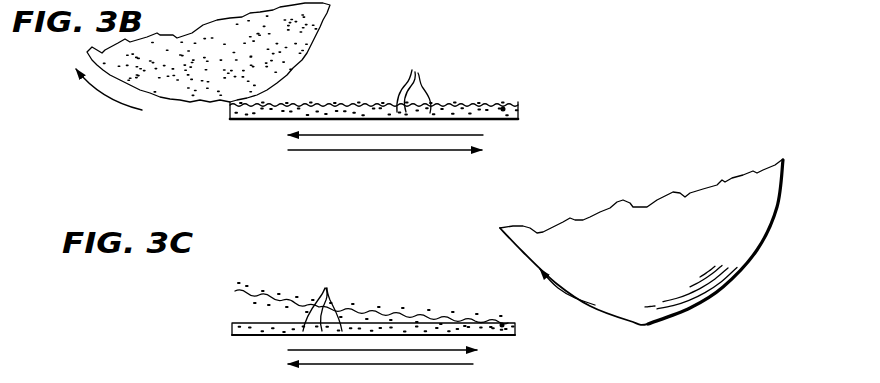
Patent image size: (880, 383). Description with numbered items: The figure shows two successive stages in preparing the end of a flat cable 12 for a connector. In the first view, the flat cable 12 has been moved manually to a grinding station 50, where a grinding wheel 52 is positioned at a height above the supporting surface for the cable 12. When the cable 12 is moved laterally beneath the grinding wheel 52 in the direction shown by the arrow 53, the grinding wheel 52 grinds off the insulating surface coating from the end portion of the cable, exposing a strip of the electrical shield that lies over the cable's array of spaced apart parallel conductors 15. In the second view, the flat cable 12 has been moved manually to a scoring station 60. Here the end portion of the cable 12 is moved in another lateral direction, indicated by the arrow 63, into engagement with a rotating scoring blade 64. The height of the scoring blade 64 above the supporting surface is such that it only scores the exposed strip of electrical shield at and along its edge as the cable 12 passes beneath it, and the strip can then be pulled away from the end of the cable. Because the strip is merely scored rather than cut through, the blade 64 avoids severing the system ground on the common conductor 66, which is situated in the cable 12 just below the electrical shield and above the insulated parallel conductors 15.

In FIG. 3B, the flat cable 12 is at (257, 122).
In FIG. 3C, the flat cable 12 is at (497, 338).
In FIG. 3B, the parallel conductors 15 is at (418, 86).
In FIG. 3C, the parallel conductors 15 is at (326, 301).
In FIG. 3B, the grinding station 50 is at (543, 110).
In FIG. 3B, the grinding wheel 52 is at (198, 90).
In FIG. 3B, the arrow 53 is at (411, 135).
In FIG. 3C, the scoring station 60 is at (755, 302).
In FIG. 3C, the arrow 63 is at (432, 350).
In FIG. 3C, the rotating scoring blade 64 is at (641, 313).
In FIG. 3B, the common conductor 66 is at (503, 109).
In FIG. 3C, the common conductor 66 is at (502, 325).